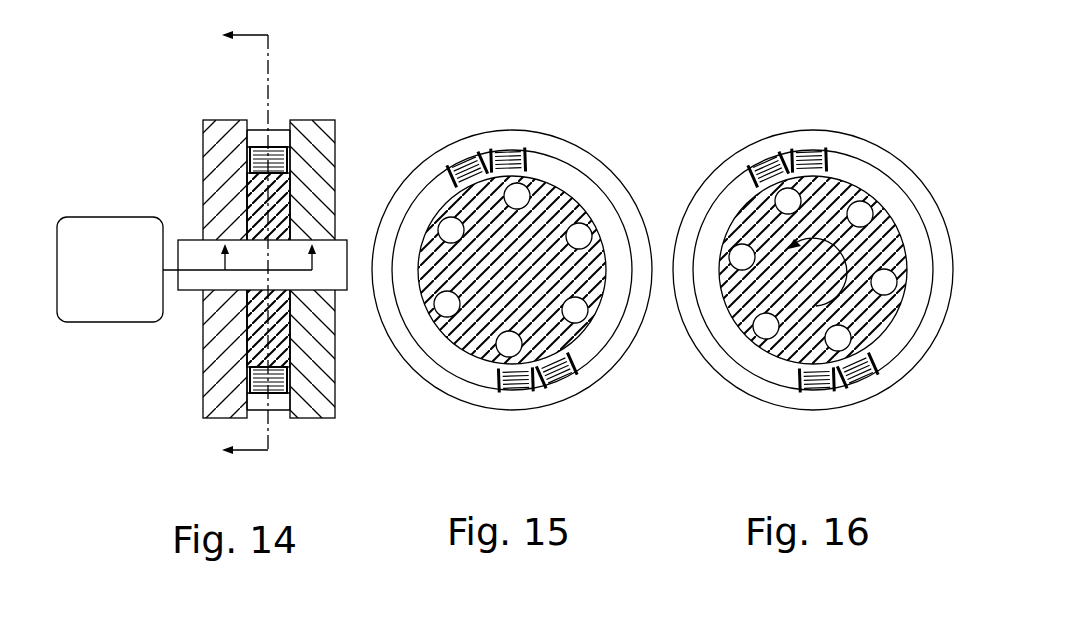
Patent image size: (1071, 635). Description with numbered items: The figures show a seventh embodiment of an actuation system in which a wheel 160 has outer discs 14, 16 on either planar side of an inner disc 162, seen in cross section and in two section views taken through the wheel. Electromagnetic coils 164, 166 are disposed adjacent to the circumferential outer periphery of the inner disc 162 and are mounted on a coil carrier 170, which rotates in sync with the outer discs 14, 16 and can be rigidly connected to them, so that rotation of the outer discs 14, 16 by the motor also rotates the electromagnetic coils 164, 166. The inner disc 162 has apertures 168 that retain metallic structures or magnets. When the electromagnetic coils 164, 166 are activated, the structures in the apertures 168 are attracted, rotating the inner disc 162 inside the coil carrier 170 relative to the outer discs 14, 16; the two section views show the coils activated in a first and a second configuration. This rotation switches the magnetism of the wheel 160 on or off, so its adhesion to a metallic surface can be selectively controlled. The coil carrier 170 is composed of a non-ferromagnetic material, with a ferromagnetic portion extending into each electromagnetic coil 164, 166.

In FIG. 14, the outer disc 14 is at (203, 172).
In FIG. 15, the outer disc 14 is at (593, 363).
In FIG. 16, the outer disc 14 is at (895, 363).
In FIG. 14, the outer disc 16 is at (335, 163).
In FIG. 14, the wheel 160 is at (239, 255).
In FIG. 14, the inner disc 162 is at (279, 138).
In FIG. 15, the inner disc 162 is at (600, 225).
In FIG. 16, the inner disc 162 is at (852, 187).
In FIG. 15, the electromagnetic coil 164 is at (513, 152).
In FIG. 16, the electromagnetic coil 164 is at (814, 152).
In FIG. 14, the electromagnetic coil 166 is at (275, 395).
In FIG. 15, the electromagnetic coil 166 is at (558, 374).
In FIG. 16, the electromagnetic coil 166 is at (859, 374).
In FIG. 15, the apertures 168 is at (580, 235).
In FIG. 16, the apertures 168 is at (886, 280).
In FIG. 14, the coil carrier 170 is at (287, 382).
In FIG. 15, the coil carrier 170 is at (458, 373).
In FIG. 16, the coil carrier 170 is at (750, 373).